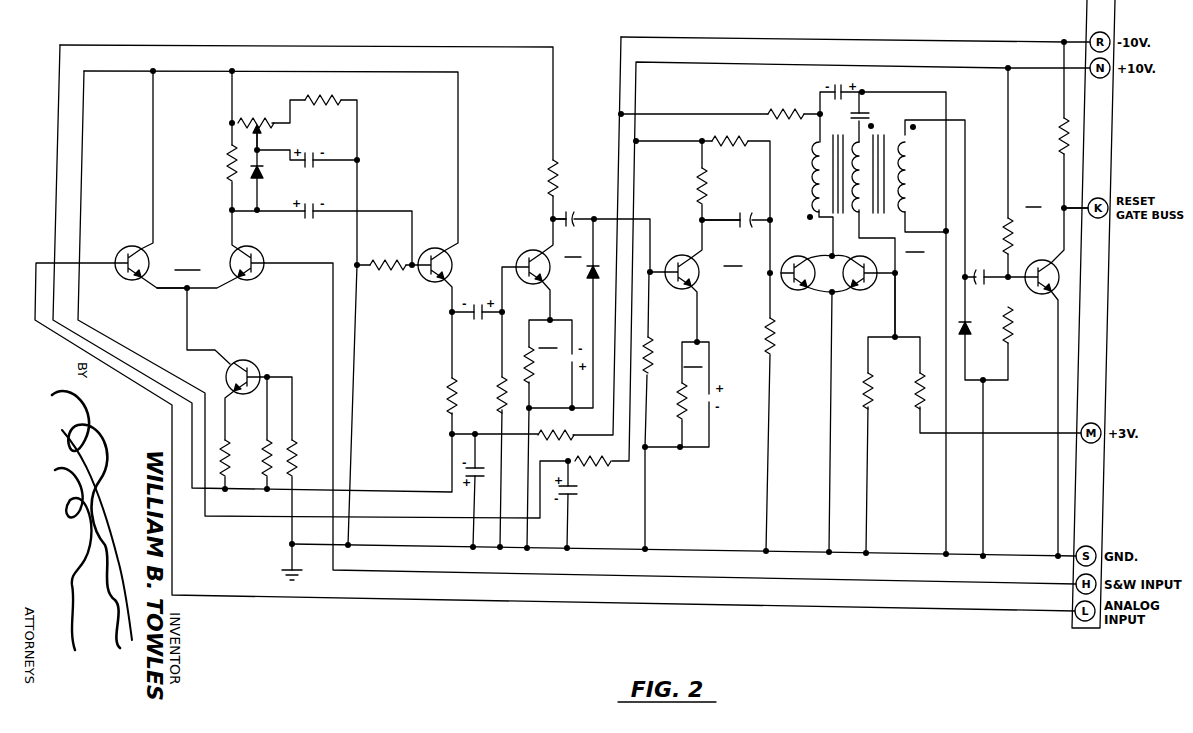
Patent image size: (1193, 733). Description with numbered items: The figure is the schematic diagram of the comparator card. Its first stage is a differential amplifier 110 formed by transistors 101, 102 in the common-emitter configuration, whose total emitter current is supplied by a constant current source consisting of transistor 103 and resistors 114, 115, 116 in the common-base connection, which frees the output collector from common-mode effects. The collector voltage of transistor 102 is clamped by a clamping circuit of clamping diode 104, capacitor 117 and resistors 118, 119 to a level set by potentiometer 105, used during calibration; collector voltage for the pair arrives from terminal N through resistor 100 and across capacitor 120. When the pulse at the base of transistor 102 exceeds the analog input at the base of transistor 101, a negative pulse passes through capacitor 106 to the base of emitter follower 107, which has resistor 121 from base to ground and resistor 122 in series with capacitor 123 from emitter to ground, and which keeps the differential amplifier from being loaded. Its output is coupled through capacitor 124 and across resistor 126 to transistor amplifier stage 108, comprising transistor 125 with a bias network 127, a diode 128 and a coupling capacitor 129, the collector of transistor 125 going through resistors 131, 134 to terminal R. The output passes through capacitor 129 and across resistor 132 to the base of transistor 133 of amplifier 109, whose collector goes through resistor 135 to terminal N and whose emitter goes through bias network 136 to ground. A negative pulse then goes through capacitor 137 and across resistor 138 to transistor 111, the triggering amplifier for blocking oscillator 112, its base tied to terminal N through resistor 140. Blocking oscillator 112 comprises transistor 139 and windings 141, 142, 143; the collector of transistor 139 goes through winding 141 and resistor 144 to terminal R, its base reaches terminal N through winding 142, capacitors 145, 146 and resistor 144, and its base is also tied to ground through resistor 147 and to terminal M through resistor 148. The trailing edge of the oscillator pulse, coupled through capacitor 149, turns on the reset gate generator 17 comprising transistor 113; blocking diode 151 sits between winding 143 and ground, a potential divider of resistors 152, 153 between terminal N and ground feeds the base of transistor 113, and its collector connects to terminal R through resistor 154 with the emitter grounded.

The resistor 100 is at (602, 466).
The transistor 101 is at (128, 248).
The transistor 102 is at (251, 248).
The transistor 103 is at (257, 362).
The clamping diode 104 is at (263, 176).
The potentiometer 105 is at (257, 120).
The capacitor 106 is at (313, 220).
The emitter follower 107 is at (432, 249).
The transistor amplifier stage 108 is at (570, 238).
The amplifier 109 is at (724, 243).
The differential amplifier 110 is at (180, 270).
The transistor 111 is at (792, 257).
The blocking oscillator 112 is at (912, 286).
The transistor 113 is at (1037, 260).
The resistor 114 is at (229, 446).
The resistor 115 is at (273, 446).
The resistor 116 is at (294, 446).
The capacitor 117 is at (308, 152).
The resistor 118 is at (228, 172).
The resistor 119 is at (332, 100).
The capacitor 120 is at (577, 493).
The resistor 121 is at (388, 270).
The resistor 122 is at (450, 392).
The capacitor 123 is at (466, 471).
The capacitor 124 is at (477, 320).
The transistor 125 is at (522, 253).
The resistor 126 is at (500, 392).
The bias network 127 is at (543, 356).
The diode 128 is at (590, 279).
The coupling capacitor 129 is at (572, 210).
The resistor 131 is at (556, 172).
The resistor 132 is at (653, 352).
The transistor 133 is at (676, 289).
The resistor 134 is at (550, 440).
The resistor 135 is at (706, 180).
The bias network 136 is at (692, 384).
The capacitor 137 is at (744, 227).
The resistor 138 is at (772, 338).
The transistor 139 is at (856, 291).
The resistor 140 is at (741, 141).
The winding 141 is at (813, 172).
The winding 142 is at (853, 190).
The winding 143 is at (904, 176).
The resistor 144 is at (786, 112).
The capacitor 145 is at (869, 115).
The capacitor 146 is at (839, 84).
The resistor 147 is at (871, 395).
The resistor 148 is at (918, 390).
The capacitor 149 is at (981, 286).
The blocking diode 151 is at (967, 336).
The resistor 152 is at (1014, 232).
The resistor 153 is at (1013, 330).
The resistor 154 is at (1062, 138).
The reset gate generator 17 is at (1055, 199).